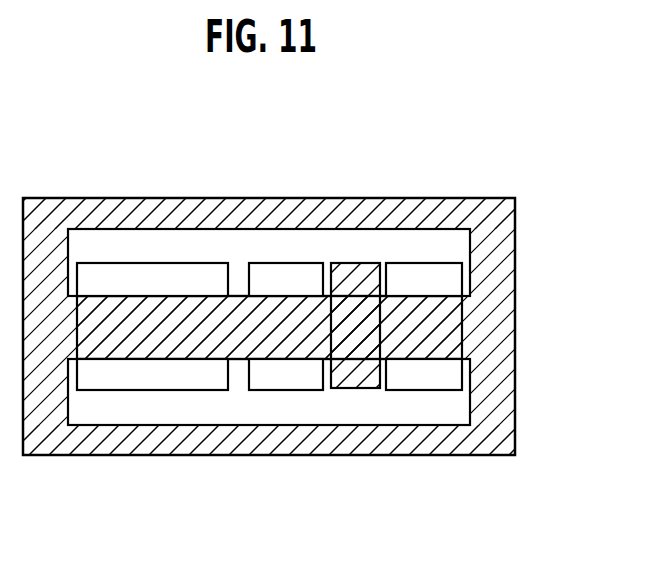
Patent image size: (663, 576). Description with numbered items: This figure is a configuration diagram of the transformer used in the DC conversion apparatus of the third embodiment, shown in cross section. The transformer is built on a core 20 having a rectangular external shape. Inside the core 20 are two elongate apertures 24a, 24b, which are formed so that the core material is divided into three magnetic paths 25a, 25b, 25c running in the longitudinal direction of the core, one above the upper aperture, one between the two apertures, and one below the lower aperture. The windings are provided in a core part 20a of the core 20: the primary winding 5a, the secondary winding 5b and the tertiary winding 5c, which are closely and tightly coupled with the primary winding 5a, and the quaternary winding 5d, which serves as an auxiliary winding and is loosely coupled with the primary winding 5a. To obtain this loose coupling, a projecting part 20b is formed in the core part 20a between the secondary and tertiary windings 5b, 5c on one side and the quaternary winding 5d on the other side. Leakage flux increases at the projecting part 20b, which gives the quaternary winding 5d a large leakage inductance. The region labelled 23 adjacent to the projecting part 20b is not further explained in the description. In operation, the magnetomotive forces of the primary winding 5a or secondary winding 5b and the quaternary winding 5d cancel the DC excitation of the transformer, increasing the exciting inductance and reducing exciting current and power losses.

The core 20 is at (250, 197).
The core part 20a is at (240, 358).
The projecting part 20b is at (353, 263).
The through hole 23 is at (378, 248).
The elongate aperture 24a is at (448, 245).
The elongate aperture 24b is at (459, 397).
The magnetic path 25a is at (460, 213).
The magnetic path 25b is at (470, 329).
The magnetic path 25c is at (460, 443).
The primary winding 5a is at (143, 393).
The secondary winding 5b is at (282, 392).
The tertiary winding 5c is at (298, 527).
The quaternary winding 5d is at (440, 392).